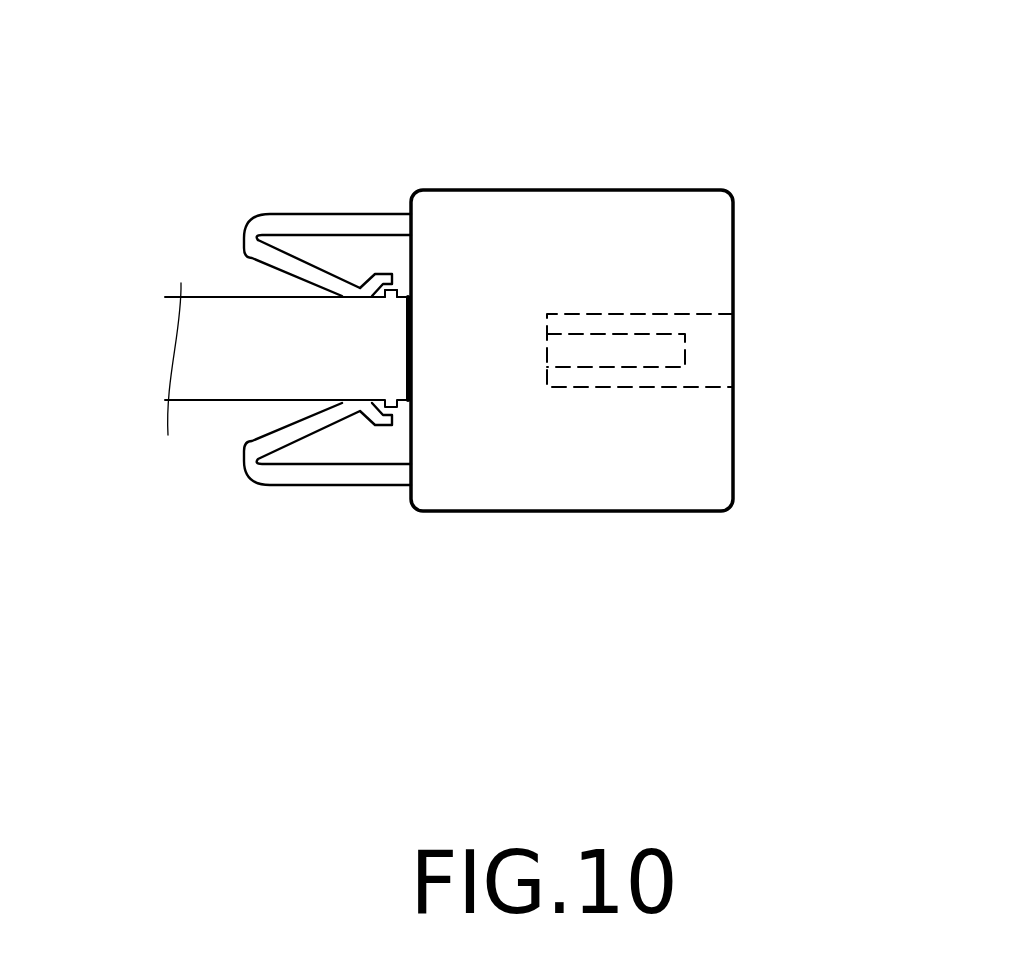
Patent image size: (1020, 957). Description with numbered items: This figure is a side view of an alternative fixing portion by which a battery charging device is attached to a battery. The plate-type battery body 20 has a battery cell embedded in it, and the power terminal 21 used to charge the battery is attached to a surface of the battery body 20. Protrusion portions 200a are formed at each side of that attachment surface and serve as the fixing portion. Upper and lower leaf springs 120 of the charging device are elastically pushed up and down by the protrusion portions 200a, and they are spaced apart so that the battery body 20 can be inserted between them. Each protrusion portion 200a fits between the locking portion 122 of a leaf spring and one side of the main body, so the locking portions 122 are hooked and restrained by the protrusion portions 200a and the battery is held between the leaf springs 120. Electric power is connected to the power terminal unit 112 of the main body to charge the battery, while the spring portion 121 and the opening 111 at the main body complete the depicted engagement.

The battery body 20 is at (200, 343).
The power terminal 21 is at (403, 352).
The housing insertion opening 111 is at (410, 350).
The power terminal unit 112 is at (710, 355).
The leaf spring 120 is at (265, 215).
The elastic piece 121 is at (312, 265).
The locking portion 122 is at (358, 285).
The protrusion portion 200a is at (386, 268).